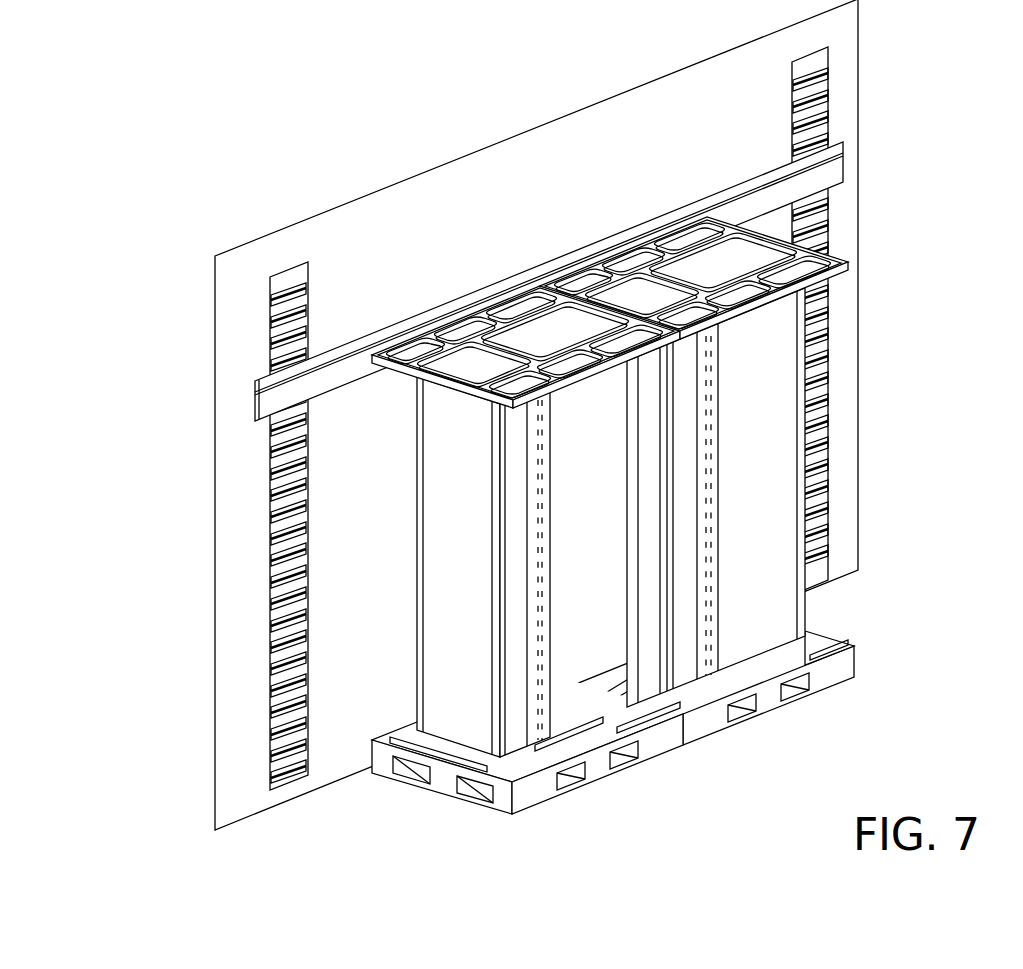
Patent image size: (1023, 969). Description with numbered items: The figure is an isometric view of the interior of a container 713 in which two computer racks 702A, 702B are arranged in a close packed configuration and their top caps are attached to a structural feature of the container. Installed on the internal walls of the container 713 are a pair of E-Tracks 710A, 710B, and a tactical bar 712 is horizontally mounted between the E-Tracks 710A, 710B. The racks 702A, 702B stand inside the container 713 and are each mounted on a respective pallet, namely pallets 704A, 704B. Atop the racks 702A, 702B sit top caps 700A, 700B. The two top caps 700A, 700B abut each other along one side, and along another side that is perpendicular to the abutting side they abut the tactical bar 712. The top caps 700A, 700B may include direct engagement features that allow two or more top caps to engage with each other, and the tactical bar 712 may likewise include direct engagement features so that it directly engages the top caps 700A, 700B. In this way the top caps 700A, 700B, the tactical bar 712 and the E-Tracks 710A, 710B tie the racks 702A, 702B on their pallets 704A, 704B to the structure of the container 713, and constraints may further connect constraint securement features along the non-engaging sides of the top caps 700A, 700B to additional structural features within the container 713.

The top cap 700A is at (467, 308).
The top cap 700B is at (633, 243).
The rack 702A is at (448, 547).
The rack 702B is at (833, 460).
The pallet 704A is at (657, 747).
The pallet 704B is at (837, 673).
The E-Track 710A is at (282, 283).
The E-Track 710B is at (815, 62).
The tactical bar 712 is at (293, 397).
The container 713 is at (242, 640).